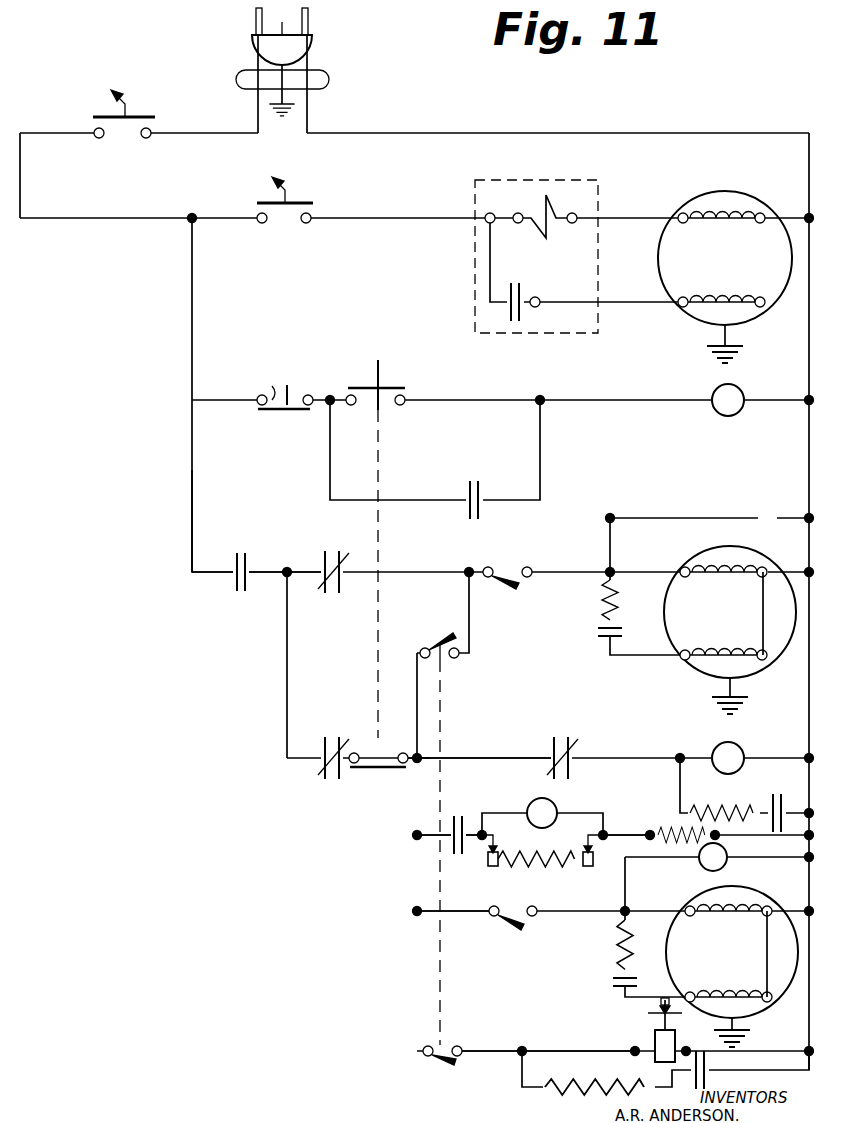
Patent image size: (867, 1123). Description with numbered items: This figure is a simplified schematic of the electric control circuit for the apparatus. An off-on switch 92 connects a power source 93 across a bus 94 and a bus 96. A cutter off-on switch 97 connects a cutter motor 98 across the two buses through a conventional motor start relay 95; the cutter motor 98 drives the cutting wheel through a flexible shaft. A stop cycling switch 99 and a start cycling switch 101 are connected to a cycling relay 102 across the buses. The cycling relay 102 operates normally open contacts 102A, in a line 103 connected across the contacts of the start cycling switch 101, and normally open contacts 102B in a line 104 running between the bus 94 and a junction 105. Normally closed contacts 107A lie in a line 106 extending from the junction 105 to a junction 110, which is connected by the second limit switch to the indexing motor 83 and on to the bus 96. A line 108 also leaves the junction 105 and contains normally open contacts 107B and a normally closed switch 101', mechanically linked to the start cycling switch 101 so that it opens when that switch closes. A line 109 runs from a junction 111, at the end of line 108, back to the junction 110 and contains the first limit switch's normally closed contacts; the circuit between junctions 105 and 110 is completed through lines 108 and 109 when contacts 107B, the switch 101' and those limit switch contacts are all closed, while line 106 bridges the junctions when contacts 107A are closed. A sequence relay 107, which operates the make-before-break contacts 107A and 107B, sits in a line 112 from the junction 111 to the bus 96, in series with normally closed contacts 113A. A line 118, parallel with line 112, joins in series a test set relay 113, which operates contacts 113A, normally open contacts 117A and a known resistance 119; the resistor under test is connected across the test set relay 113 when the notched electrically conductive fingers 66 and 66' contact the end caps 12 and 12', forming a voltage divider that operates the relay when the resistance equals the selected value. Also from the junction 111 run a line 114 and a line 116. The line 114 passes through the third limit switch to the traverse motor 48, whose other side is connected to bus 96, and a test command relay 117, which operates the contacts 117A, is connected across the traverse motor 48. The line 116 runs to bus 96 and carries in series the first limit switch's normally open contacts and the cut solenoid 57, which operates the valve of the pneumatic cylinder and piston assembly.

The power source 93 is at (302, 48).
The off-on switch 92 is at (145, 117).
The cutter off-on switch 97 is at (312, 203).
The bus 94 is at (196, 302).
The motor start relay 95 is at (600, 233).
The cutter motor 98 is at (765, 206).
The bus 96 is at (810, 1023).
The stop cycling switch 99 is at (272, 372).
The start cycling switch 101 is at (406, 544).
The cycling relay 102 is at (736, 392).
The line 103 is at (420, 498).
The normally open contacts 102A is at (488, 498).
The line 104 is at (190, 476).
The normally open contacts 102B is at (257, 540).
The line 106 is at (296, 568).
The junction 105 is at (284, 578).
The normally closed contacts 107A is at (348, 562).
The junction 110 is at (469, 569).
The indexing motor 83 is at (775, 570).
The line 108 is at (287, 680).
The line 109 is at (417, 698).
The normally open contacts 107B is at (320, 767).
The normally closed switch 101' is at (377, 773).
The junction 111 is at (416, 766).
The line 112 is at (466, 747).
The normally closed contacts 113A is at (582, 734).
The test set relay 113 is at (542, 798).
The normally open contacts 117A is at (470, 818).
The line 118 is at (623, 841).
The electrically conductive finger 66 is at (504, 839).
The electrically conductive finger 66' is at (584, 834).
The end cap 12 is at (515, 869).
The end cap 12' is at (603, 855).
The known resistance 119 is at (657, 829).
The sequence relay 107 is at (738, 768).
The test command relay 117 is at (724, 852).
The line 114 is at (466, 900).
The line 116 is at (493, 1048).
The cut solenoid 57 is at (675, 1046).
The traverse motor 48 is at (786, 988).